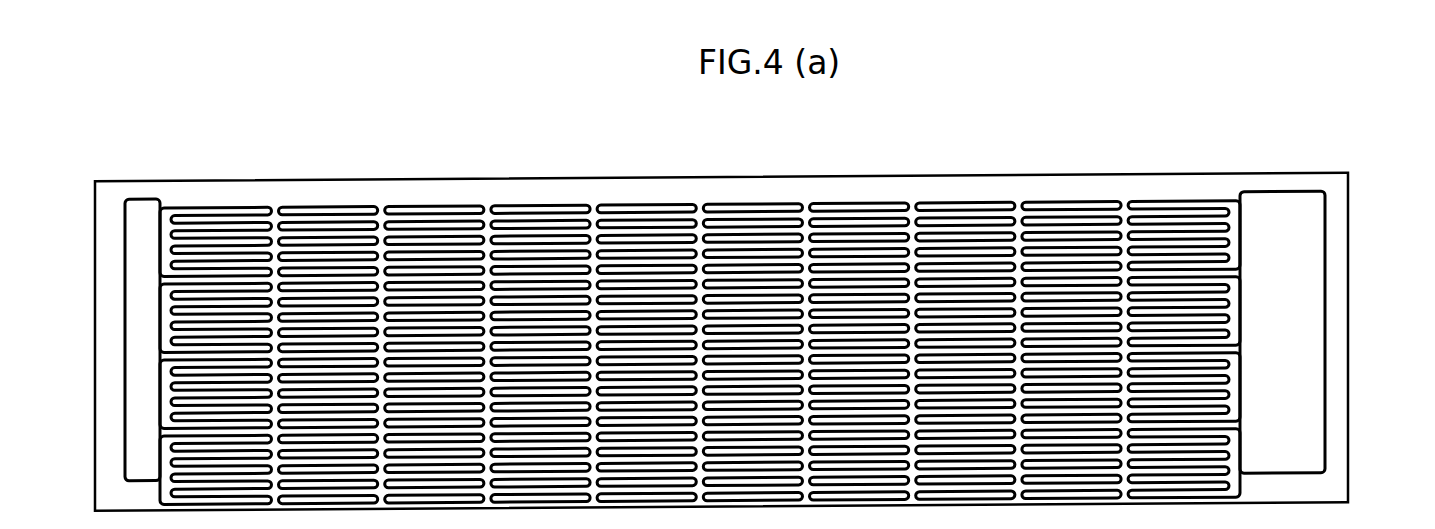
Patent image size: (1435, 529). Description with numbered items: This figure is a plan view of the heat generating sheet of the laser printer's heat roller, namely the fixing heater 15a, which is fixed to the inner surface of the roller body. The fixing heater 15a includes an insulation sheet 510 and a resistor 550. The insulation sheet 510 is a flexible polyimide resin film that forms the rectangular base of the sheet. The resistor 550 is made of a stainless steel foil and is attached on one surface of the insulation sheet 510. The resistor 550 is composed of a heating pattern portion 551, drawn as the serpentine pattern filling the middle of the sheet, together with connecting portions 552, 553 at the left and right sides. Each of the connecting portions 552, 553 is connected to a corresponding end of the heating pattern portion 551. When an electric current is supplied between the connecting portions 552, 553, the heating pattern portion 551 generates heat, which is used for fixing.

The fixing heater 15a is at (1282, 133).
The insulation sheet 510 is at (1324, 268).
The resistor 550 is at (712, 194).
The heating pattern portion 551 is at (1040, 190).
The connecting portion 552 is at (138, 191).
The connecting portion 553 is at (1258, 183).